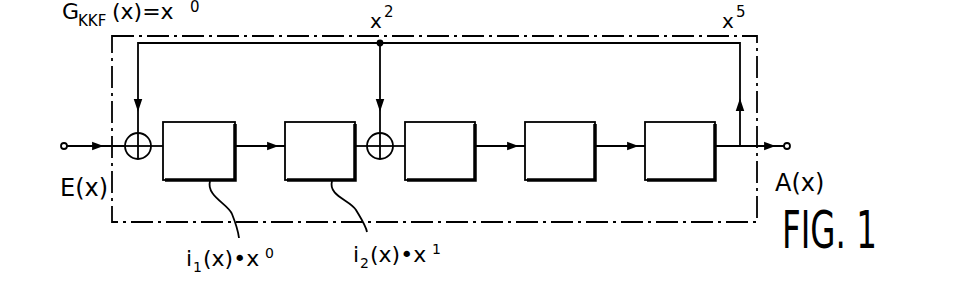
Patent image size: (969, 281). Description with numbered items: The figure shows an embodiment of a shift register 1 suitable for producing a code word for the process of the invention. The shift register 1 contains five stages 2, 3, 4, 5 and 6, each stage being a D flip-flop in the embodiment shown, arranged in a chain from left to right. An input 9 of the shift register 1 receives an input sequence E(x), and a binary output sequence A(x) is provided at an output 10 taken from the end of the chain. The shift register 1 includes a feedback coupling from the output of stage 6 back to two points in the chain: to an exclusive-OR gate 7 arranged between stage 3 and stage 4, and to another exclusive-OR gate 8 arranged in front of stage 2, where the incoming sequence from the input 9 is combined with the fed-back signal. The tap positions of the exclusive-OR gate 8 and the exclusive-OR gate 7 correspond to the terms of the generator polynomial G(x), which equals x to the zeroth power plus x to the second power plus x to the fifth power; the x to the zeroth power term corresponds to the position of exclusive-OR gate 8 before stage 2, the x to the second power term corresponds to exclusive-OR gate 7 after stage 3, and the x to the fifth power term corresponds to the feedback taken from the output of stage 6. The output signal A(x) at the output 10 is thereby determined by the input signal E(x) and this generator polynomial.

The shift register 1 is at (758, 55).
The stage 2 is at (205, 121).
The stage 3 is at (320, 121).
The stage 4 is at (443, 121).
The stage 5 is at (562, 121).
The stage 6 is at (686, 121).
The exclusive-OR gate 7 is at (380, 160).
The exclusive-OR gate 8 is at (138, 160).
The input 9 is at (65, 142).
The output 10 is at (791, 143).